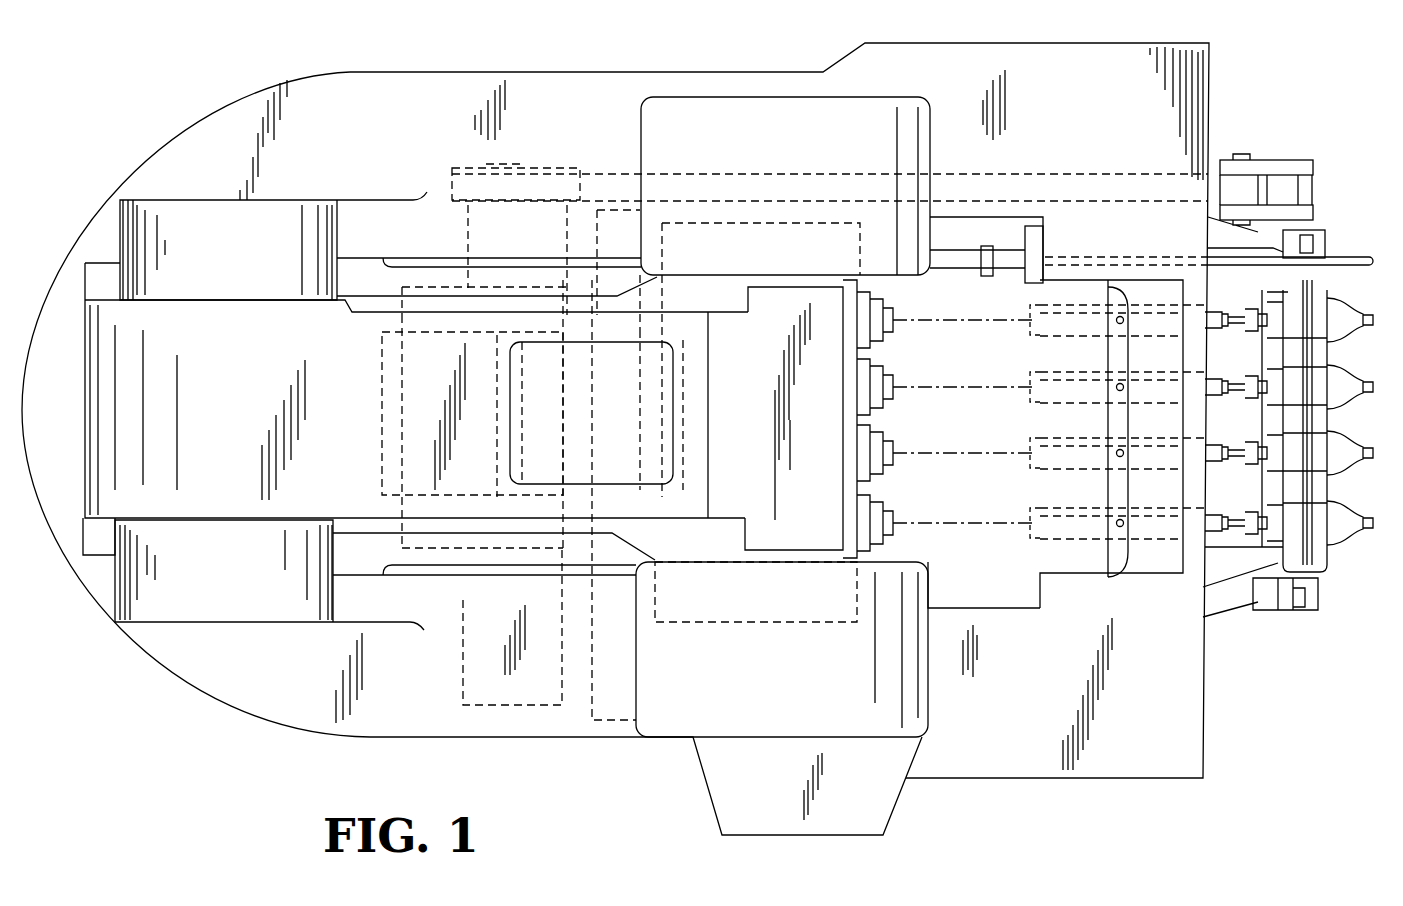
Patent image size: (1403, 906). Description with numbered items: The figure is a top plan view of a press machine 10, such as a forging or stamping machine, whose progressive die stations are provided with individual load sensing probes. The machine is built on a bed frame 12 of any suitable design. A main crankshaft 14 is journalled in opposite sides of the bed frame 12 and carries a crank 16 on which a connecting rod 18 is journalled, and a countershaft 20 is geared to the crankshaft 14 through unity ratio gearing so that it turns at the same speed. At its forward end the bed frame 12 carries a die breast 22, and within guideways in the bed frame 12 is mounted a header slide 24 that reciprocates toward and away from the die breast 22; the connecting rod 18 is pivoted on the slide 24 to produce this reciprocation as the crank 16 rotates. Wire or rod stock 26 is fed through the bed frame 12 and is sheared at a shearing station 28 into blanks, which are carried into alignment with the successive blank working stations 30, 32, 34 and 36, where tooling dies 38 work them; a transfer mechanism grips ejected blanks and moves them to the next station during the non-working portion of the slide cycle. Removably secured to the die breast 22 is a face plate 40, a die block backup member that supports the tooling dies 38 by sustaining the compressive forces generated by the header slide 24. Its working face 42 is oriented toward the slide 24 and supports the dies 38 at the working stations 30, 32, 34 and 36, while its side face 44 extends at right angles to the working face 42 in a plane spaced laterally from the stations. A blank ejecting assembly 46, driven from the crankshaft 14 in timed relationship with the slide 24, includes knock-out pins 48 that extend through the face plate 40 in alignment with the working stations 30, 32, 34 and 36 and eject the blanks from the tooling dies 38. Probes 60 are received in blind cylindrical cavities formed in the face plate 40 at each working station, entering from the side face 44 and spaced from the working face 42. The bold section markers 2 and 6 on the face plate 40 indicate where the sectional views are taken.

The press machine 10 is at (697, 60).
The bed frame 12 is at (545, 80).
The main crankshaft 14 is at (460, 632).
The crank 16 is at (398, 502).
The connecting rod 18 is at (382, 388).
The countershaft 20 is at (592, 703).
The die breast 22 is at (1175, 430).
The header slide 24 is at (721, 429).
The wire or rod stock 26 is at (1350, 257).
The shearing station 28 is at (1006, 275).
The blank working station 30 is at (960, 328).
The blank working station 32 is at (960, 395).
The blank working station 34 is at (958, 462).
The blank working station 36 is at (958, 528).
The tooling dies 38 is at (1033, 362).
The face plate 40 is at (1100, 436).
The working face 42 is at (1118, 290).
The side face 44 is at (1123, 575).
The blank ejecting assembly 46 is at (1367, 572).
The knock-out pins 48 is at (1212, 328).
The probes 60 is at (1124, 384).
The section line 2 is at (1118, 302).
The section line 6 is at (1118, 500).